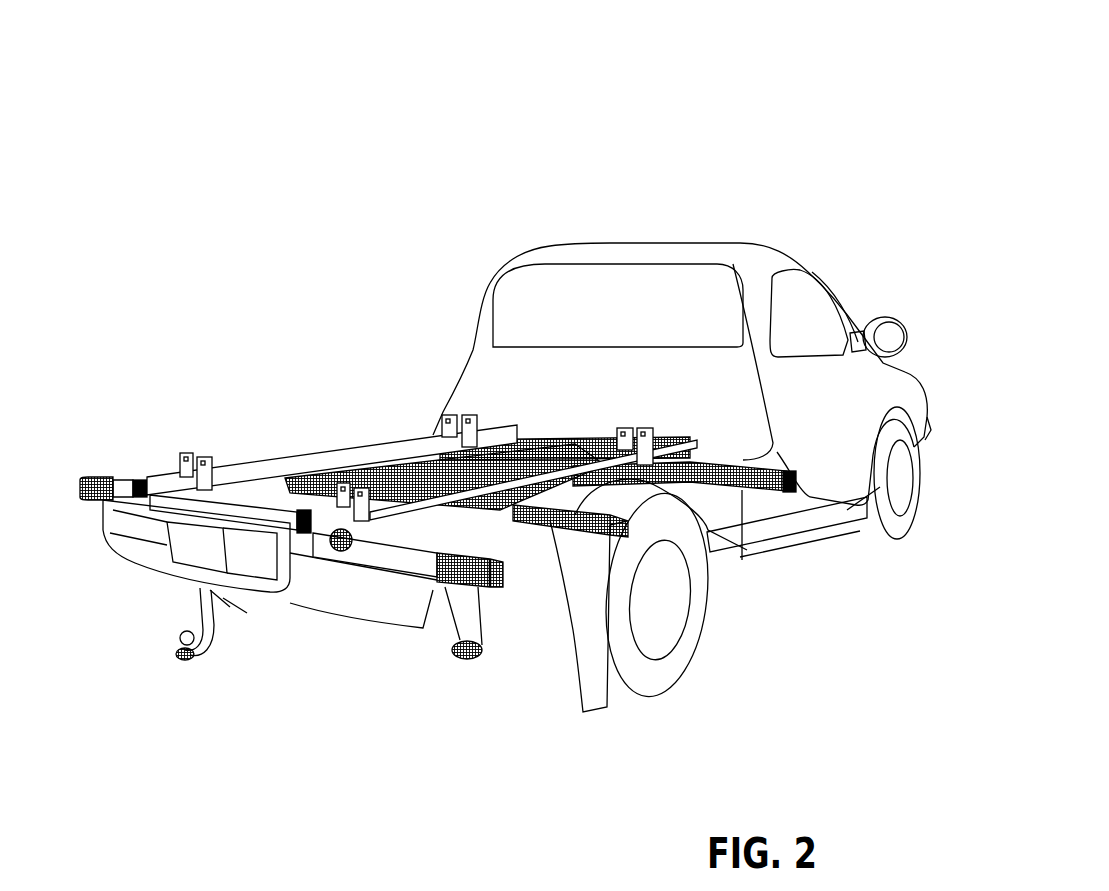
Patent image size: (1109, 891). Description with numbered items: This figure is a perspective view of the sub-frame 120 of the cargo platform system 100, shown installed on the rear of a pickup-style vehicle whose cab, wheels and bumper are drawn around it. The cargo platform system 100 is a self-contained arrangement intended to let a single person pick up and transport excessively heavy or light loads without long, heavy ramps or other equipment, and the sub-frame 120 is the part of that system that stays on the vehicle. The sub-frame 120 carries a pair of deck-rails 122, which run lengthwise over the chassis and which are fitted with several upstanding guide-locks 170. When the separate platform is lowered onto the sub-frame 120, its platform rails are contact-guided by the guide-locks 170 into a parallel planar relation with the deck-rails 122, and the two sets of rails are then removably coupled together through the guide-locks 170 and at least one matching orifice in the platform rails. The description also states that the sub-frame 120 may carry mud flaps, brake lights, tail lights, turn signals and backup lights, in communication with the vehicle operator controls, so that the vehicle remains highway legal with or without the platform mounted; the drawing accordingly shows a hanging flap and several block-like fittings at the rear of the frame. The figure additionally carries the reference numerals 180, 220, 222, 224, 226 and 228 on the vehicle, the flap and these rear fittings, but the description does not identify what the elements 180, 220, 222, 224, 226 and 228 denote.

The cargo platform system 100 is at (679, 86).
The vehicle 180 is at (680, 238).
The sub-frame 120 is at (348, 470).
The deck-rails 122 is at (550, 520).
The guide-locks 170 is at (192, 448).
The mud flap 220 is at (545, 702).
The foot pad 222 is at (480, 648).
The end cap 224 is at (92, 503).
The end block 226 is at (492, 593).
The roller 228 is at (337, 556).